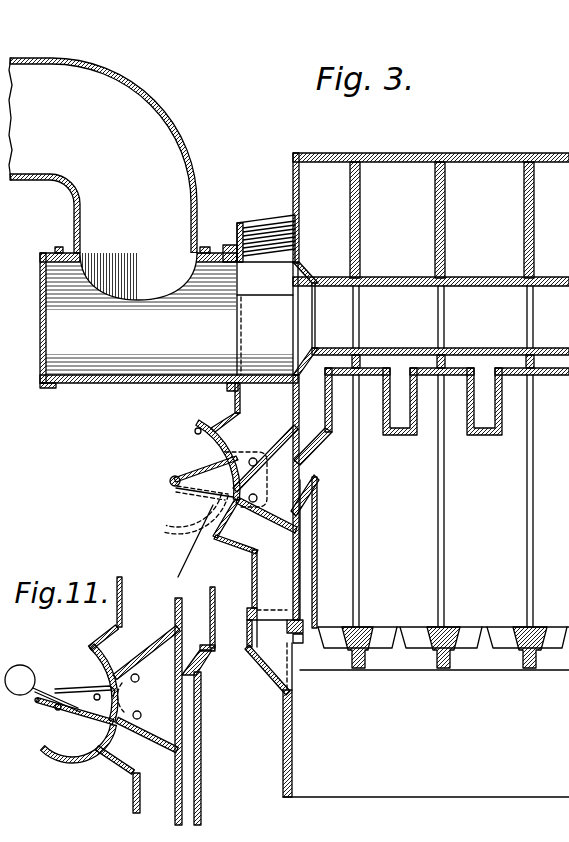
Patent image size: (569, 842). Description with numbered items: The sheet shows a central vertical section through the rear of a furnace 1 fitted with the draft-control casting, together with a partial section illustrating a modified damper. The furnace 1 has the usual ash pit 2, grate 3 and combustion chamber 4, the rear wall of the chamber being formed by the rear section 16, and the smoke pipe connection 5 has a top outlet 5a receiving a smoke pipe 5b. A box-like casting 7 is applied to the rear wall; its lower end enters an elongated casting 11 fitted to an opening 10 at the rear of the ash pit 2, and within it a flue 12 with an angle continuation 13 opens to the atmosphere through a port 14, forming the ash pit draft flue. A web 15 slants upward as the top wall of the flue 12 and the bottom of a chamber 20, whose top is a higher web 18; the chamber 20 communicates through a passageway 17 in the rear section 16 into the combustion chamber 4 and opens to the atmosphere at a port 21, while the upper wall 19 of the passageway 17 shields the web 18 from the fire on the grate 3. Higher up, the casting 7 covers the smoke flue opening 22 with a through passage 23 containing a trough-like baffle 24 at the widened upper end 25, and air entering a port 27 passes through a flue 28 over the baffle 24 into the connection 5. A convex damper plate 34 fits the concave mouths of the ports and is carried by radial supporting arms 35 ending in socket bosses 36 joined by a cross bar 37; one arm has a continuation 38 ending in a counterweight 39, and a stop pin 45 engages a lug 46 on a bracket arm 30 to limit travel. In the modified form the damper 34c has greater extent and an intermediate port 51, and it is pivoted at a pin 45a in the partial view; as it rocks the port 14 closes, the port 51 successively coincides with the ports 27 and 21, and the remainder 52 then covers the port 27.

In FIG. 3, the furnace 1 is at (500, 156).
In FIG. 3, the ash pit 2 is at (426, 733).
In FIG. 3, the grate 3 is at (448, 632).
In FIG. 3, the combustion chamber 4 is at (431, 456).
In FIG. 3, the smoke pipe connection 5 is at (169, 317).
In FIG. 3, the top outlet 5a is at (138, 273).
In FIG. 3, the smoke pipe 5b is at (151, 103).
In FIG. 3, the casting 7 is at (270, 222).
In FIG. 11, the casting 7 is at (117, 613).
In FIG. 3, the opening 10 is at (291, 658).
In FIG. 3, the elongated casting 11 is at (262, 662).
In FIG. 3, the flue 12 is at (263, 592).
In FIG. 11, the flue 12 is at (140, 798).
In FIG. 3, the angle continuation 13 is at (245, 541).
In FIG. 11, the angle continuation 13 is at (132, 774).
In FIG. 3, the port 14 is at (213, 541).
In FIG. 11, the port 14 is at (108, 741).
In FIG. 3, the web 15 is at (266, 523).
In FIG. 11, the web 15 is at (147, 739).
In FIG. 3, the rear section 16 is at (301, 562).
In FIG. 11, the rear section 16 is at (182, 754).
In FIG. 3, the passageway 17 is at (314, 505).
In FIG. 11, the passageway 17 is at (190, 673).
In FIG. 3, the web 18 is at (263, 438).
In FIG. 11, the web 18 is at (172, 644).
In FIG. 3, the upper wall 19 is at (318, 452).
In FIG. 11, the upper wall 19 is at (186, 650).
In FIG. 3, the chamber 20 is at (258, 497).
In FIG. 11, the chamber 20 is at (142, 717).
In FIG. 3, the port 21 is at (259, 489).
In FIG. 11, the port 21 is at (139, 700).
In FIG. 3, the smoke flue opening 22 is at (313, 327).
In FIG. 3, the through passage 23 is at (265, 285).
In FIG. 3, the baffle 24 is at (265, 313).
In FIG. 3, the upper end 25 is at (226, 244).
In FIG. 3, the port 27 is at (224, 444).
In FIG. 11, the port 27 is at (108, 653).
In FIG. 3, the flue 28 is at (250, 392).
In FIG. 11, the flue 28 is at (150, 612).
In FIG. 3, the bracket arm 30 is at (192, 504).
In FIG. 11, the bracket arm 30 is at (80, 692).
In FIG. 3, the damper plate 34 is at (197, 424).
In FIG. 11, the damper 34c is at (56, 753).
In FIG. 3, the radial supporting arm 35 is at (203, 468).
In FIG. 11, the radial supporting arm 35 is at (78, 716).
In FIG. 3, the socket boss 36 is at (557, 418).
In FIG. 3, the cross bar 37 is at (170, 480).
In FIG. 11, the cross bar 37 is at (35, 707).
In FIG. 11, the continuation 38 is at (40, 693).
In FIG. 3, the counterweight 39 is at (568, 396).
In FIG. 11, the counterweight 39 is at (20, 665).
In FIG. 3, the stop pin 45 is at (195, 433).
In FIG. 11, the pivot pin 45a is at (97, 693).
In FIG. 3, the lug 46 is at (193, 550).
In FIG. 11, the port 51 is at (56, 710).
In FIG. 11, the remainder of the damper 52 is at (100, 638).